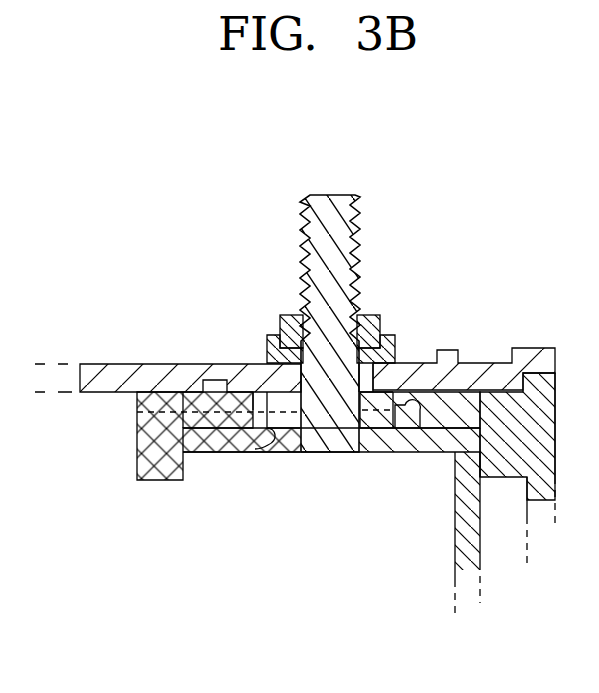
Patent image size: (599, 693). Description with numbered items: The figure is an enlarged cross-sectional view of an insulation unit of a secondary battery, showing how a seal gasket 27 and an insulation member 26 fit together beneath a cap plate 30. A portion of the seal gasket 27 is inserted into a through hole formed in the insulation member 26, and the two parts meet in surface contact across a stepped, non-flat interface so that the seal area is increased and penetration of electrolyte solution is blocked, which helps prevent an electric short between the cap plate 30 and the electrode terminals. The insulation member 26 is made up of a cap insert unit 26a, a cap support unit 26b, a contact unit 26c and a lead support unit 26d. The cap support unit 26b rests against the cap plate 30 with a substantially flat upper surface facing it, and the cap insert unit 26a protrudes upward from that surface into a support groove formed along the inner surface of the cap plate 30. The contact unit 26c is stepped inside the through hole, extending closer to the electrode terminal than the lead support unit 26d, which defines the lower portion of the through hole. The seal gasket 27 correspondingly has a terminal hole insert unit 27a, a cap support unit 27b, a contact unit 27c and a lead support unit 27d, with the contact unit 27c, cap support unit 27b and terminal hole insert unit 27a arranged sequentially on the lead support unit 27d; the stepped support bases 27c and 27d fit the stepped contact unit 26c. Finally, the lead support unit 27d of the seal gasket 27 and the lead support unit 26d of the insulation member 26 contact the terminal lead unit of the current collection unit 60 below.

The cap plate 30 is at (118, 376).
The insulation member 26 is at (60, 410).
The cap insert unit 26a is at (262, 400).
The cap support unit 26b is at (140, 404).
The contact unit 26c is at (255, 449).
The lead support unit 26d is at (205, 460).
The seal gasket 27 is at (432, 528).
The terminal hole insert unit 27a is at (358, 388).
The cap support unit 27b is at (375, 398).
The contact unit 27c is at (418, 404).
The lead support unit 27d is at (391, 418).
The current collection unit 60 is at (286, 444).